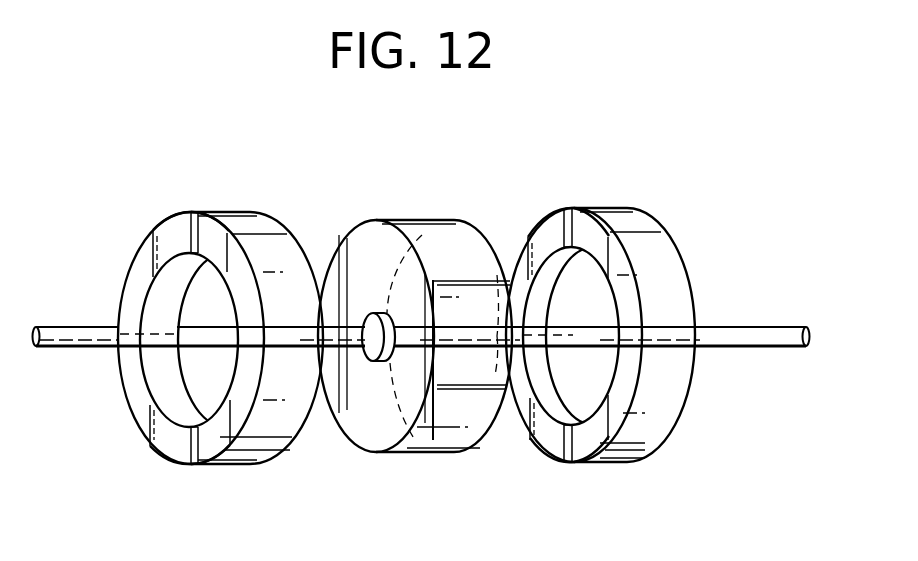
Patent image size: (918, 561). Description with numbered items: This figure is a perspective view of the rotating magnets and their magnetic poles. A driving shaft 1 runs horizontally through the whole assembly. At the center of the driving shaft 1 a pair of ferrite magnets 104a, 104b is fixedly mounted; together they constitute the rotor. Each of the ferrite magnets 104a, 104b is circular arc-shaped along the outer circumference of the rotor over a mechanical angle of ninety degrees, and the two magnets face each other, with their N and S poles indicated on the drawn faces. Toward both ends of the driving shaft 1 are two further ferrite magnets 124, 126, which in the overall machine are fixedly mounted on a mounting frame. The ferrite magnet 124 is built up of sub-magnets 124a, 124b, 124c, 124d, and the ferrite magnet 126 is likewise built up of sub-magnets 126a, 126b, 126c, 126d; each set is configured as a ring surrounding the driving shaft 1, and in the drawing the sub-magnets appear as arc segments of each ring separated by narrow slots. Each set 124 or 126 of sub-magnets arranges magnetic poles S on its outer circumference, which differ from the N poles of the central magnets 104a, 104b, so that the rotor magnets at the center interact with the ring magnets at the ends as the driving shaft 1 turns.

The driving shaft 1 is at (80, 337).
The ferrite magnet 124 is at (213, 327).
The sub-magnet 124a is at (237, 250).
The sub-magnet 124b is at (230, 463).
The sub-magnet 124c is at (167, 440).
The sub-magnet 124d is at (163, 228).
The ferrite magnet 104a is at (378, 233).
The ferrite magnet 104b is at (383, 445).
The ferrite magnet 126 is at (636, 331).
The sub-magnet 126a is at (618, 275).
The sub-magnet 126b is at (647, 453).
The sub-magnet 126c is at (552, 447).
The sub-magnet 126d is at (543, 227).